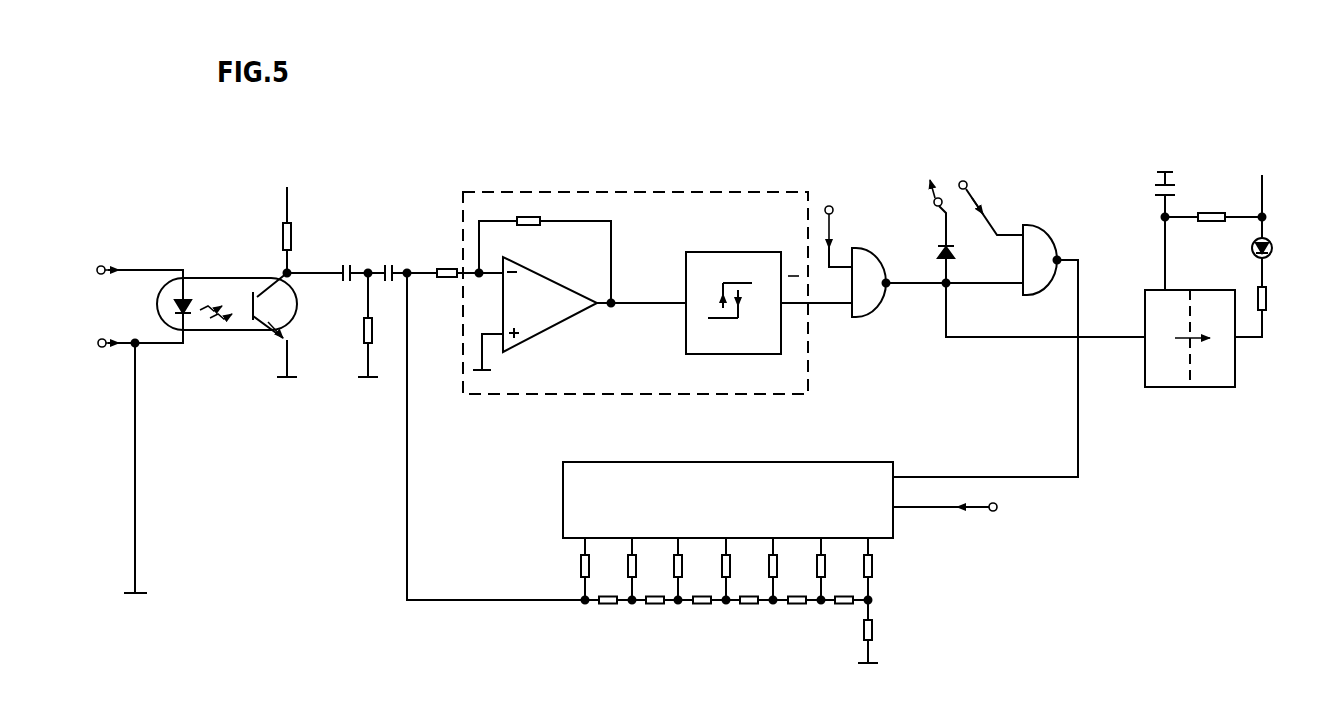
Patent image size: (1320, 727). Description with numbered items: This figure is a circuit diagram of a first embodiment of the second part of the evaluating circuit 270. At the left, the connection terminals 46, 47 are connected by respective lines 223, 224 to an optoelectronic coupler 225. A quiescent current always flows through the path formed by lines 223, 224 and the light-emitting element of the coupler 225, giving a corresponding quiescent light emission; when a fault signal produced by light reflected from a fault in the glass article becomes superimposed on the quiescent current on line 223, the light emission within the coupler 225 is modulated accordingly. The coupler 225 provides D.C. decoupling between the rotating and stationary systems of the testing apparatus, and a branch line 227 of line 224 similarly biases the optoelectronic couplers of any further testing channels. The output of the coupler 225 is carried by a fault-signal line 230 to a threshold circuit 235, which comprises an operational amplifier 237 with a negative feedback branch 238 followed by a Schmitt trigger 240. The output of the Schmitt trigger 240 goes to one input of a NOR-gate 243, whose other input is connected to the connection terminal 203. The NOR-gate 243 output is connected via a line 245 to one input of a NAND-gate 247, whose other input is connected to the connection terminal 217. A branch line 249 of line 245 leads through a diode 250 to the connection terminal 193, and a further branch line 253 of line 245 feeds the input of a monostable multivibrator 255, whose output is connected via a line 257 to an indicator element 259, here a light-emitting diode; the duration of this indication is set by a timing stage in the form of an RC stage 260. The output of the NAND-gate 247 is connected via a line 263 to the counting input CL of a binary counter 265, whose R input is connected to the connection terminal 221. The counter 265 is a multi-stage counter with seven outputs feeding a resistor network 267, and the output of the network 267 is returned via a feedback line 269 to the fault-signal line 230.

The connection terminal 46 is at (112, 254).
The connection terminal 47 is at (118, 363).
The connection terminal 193 is at (934, 204).
The connection terminal 203 is at (833, 216).
The connection terminal 217 is at (968, 178).
The connection terminal 221 is at (995, 511).
The line 223 is at (133, 268).
The line 224 is at (168, 347).
The optoelectronic coupler 225 is at (225, 278).
The branch line 227 is at (137, 468).
The fault-signal line 230 is at (312, 268).
The threshold circuit 235 is at (462, 203).
The operational amplifier 237 is at (537, 338).
The negative feedback branch 238 is at (553, 221).
The Schmitt trigger 240 is at (733, 354).
The NOR-gate 243 is at (867, 316).
The line 245 is at (907, 286).
The NAND-gate 247 is at (1048, 232).
The branch line 249 is at (951, 270).
The diode 250 is at (940, 250).
The branch line 253 is at (983, 338).
The monostable multivibrator 255 is at (1145, 387).
The line 257 is at (1253, 339).
The indicator element 259 is at (1251, 249).
The RC stage 260 is at (1207, 180).
The line 263 is at (1077, 443).
The binary counter 265 is at (812, 462).
The resistor network 267 is at (566, 573).
The feedback line 269 is at (406, 513).
The evaluating circuit 270 is at (418, 110).